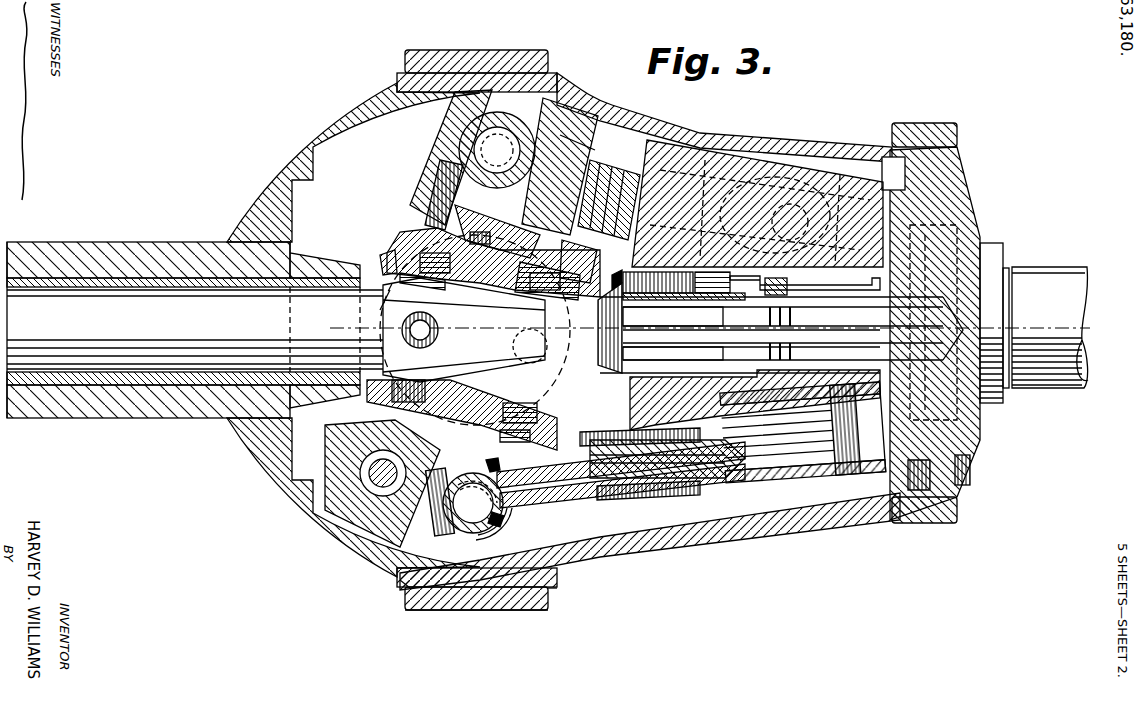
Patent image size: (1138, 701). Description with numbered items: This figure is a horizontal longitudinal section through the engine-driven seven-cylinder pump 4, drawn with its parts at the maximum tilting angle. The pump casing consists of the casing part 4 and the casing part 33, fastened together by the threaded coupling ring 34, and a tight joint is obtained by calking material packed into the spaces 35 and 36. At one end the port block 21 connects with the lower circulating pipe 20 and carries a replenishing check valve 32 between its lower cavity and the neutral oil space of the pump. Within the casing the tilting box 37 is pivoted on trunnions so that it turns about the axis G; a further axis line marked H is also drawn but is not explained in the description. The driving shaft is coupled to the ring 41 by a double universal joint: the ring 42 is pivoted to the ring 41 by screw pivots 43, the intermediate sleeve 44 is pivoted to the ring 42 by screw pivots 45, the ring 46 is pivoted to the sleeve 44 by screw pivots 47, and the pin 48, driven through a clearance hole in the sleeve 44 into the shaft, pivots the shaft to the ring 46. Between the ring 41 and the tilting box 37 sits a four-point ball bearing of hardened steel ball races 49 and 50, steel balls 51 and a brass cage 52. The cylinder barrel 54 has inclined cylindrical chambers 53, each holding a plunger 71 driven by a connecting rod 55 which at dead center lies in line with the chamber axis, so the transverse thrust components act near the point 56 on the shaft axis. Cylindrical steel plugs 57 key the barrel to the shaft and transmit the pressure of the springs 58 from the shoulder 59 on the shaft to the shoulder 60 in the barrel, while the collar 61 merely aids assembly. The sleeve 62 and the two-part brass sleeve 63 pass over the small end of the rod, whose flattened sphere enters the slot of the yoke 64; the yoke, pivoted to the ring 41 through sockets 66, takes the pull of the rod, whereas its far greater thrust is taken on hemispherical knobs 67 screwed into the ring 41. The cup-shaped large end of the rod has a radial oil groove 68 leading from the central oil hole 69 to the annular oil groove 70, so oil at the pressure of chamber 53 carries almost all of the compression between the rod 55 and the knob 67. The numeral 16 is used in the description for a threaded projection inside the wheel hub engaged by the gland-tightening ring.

The pump casing part 4 is at (648, 538).
The projection 16 is at (383, 328).
The circulating pipe 20 is at (1050, 327).
The port block 21 is at (964, 195).
The replenishing check valve 32 is at (908, 473).
The pump casing part 33 is at (335, 517).
The threaded coupling ring 34 is at (470, 610).
The calking space 35 is at (405, 584).
The calking space 36 is at (557, 588).
The tilting box 37 is at (552, 126).
The ring 41 is at (616, 222).
The ring 42 is at (520, 245).
The screw pivots 43 is at (560, 362).
The intermediate sleeve 44 is at (500, 262).
The screw pivots 45 is at (523, 290).
The ring 46 is at (392, 258).
The screw pivots 47 is at (424, 278).
The pin 48 is at (418, 320).
The ball race 49 is at (456, 134).
The ball race 50 is at (375, 548).
The steel balls 51 is at (497, 150).
The brass cage 52 is at (440, 170).
The cylindrical chamber 53 is at (803, 432).
The cylinder barrel 54 is at (640, 392).
The connecting rod 55 is at (560, 498).
The point in shaft axis 56 is at (700, 322).
The cylindrical steel plugs 57 is at (712, 282).
The springs 58 is at (660, 296).
The shoulder 59 is at (612, 286).
The shoulder 60 is at (726, 275).
The collar 61 is at (790, 296).
The sleeve 62 is at (598, 432).
The brass sleeve 63 is at (645, 500).
The yoke 64 is at (506, 520).
The socket 66 is at (440, 535).
The hemispherical knob 67 is at (465, 533).
The radial oil groove 68 is at (518, 462).
The central oil hole 69 is at (566, 478).
The annular oil groove 70 is at (492, 530).
The plunger 71 is at (745, 462).
The tilting axis G is at (483, 345).
The coupling H is at (587, 368).